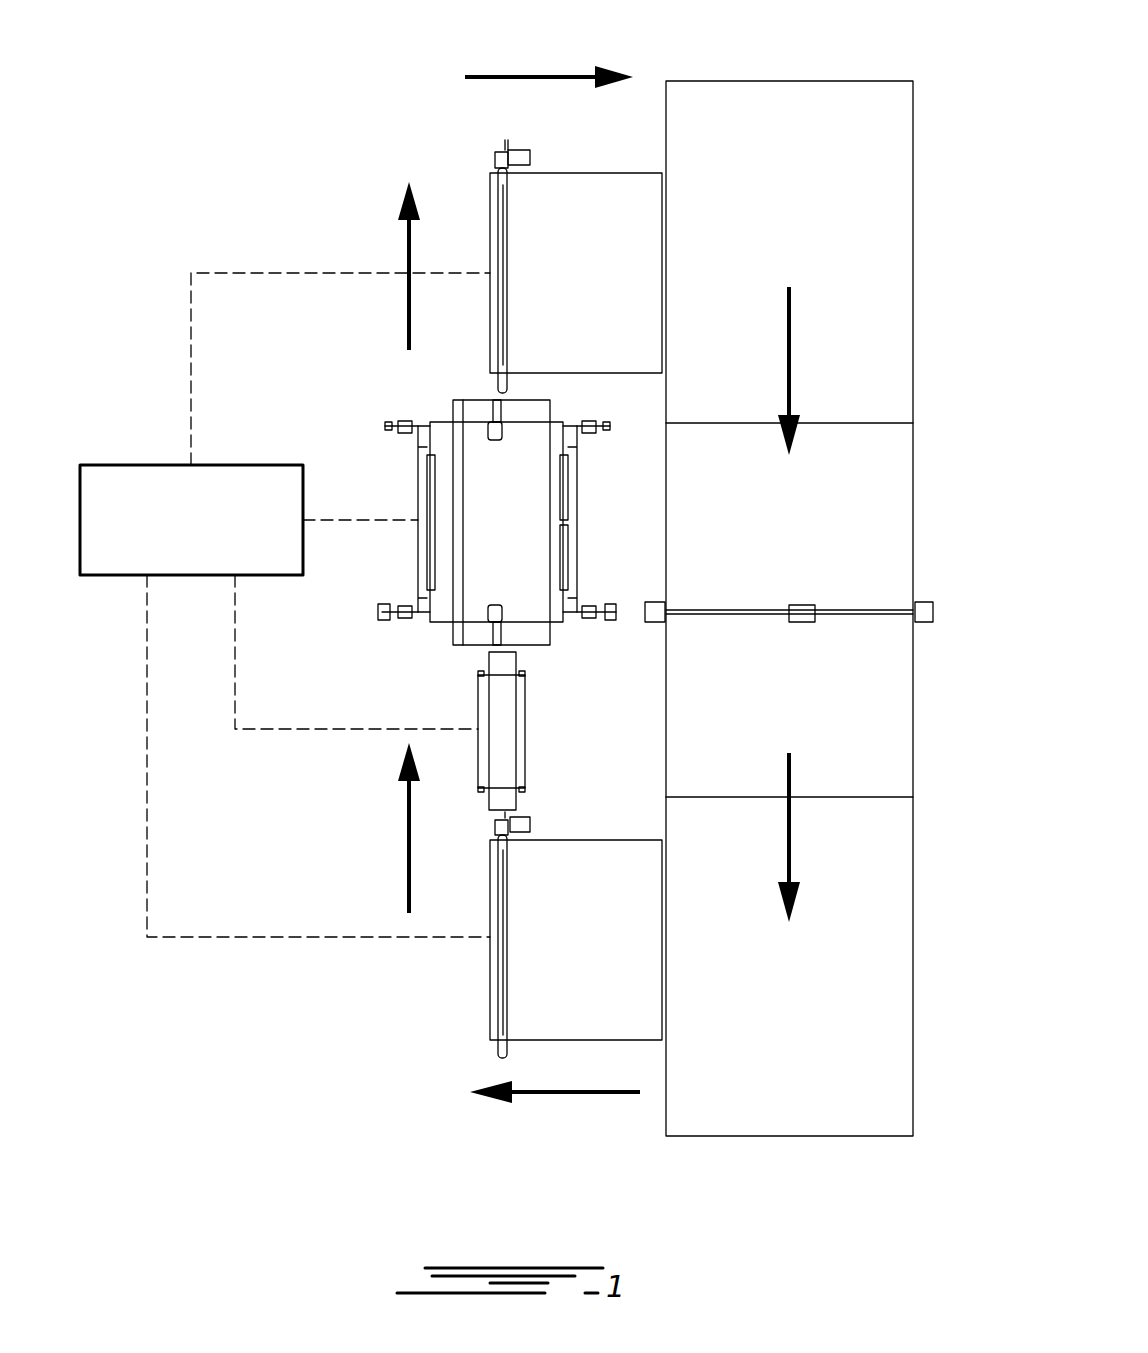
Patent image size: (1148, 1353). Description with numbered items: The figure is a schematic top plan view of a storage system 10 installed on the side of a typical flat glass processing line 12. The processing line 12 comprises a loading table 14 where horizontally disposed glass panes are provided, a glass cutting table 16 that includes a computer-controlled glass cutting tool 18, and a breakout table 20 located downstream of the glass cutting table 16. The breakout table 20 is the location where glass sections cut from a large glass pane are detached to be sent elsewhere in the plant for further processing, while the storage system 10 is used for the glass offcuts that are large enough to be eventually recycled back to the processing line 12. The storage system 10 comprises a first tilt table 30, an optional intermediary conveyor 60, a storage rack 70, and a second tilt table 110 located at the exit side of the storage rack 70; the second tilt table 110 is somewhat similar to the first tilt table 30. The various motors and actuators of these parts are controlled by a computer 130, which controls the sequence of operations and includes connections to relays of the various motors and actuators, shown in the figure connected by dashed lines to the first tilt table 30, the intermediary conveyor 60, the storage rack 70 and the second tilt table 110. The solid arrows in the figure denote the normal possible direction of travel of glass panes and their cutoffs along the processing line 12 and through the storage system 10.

The storage system 10 is at (278, 1041).
The flat glass processing line 12 is at (838, 1155).
The loading table 14 is at (858, 103).
The glass cutting table 16 is at (730, 507).
The computer-controlled glass cutting tool 18 is at (705, 617).
The breakout table 20 is at (695, 1107).
The first tilt table 30 is at (537, 982).
The intermediary conveyor 60 is at (458, 697).
The storage rack 70 is at (378, 468).
The second tilt table 110 is at (465, 148).
The computer 130 is at (140, 462).